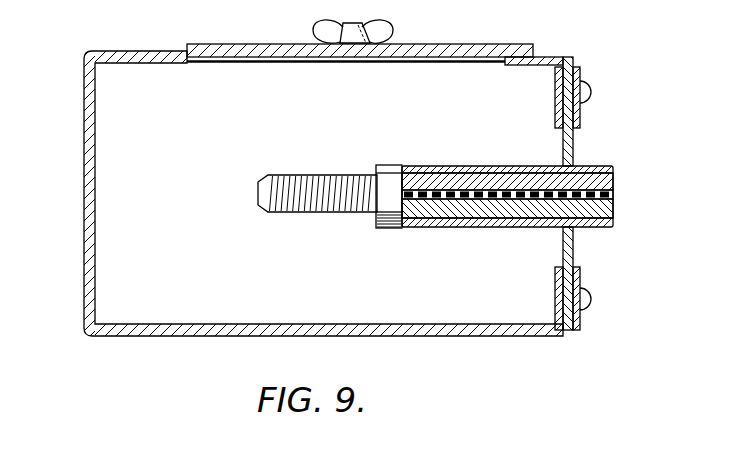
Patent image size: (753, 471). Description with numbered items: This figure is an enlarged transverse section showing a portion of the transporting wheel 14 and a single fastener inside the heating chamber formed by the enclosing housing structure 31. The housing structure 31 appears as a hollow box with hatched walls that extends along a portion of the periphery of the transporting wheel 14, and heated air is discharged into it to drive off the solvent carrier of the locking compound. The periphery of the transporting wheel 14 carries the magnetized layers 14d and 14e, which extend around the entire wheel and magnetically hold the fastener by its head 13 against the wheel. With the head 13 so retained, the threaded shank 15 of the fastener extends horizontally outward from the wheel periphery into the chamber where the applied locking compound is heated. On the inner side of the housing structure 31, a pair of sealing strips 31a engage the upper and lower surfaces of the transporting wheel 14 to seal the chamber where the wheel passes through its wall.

The enclosing housing structure 31 is at (84, 211).
The sealing strips 31a is at (573, 137).
The head 13 is at (387, 225).
The transporting wheel 14 is at (541, 169).
The magnetized layer 14d is at (607, 183).
The magnetized layer 14e is at (613, 212).
The threaded shank 15 is at (317, 210).